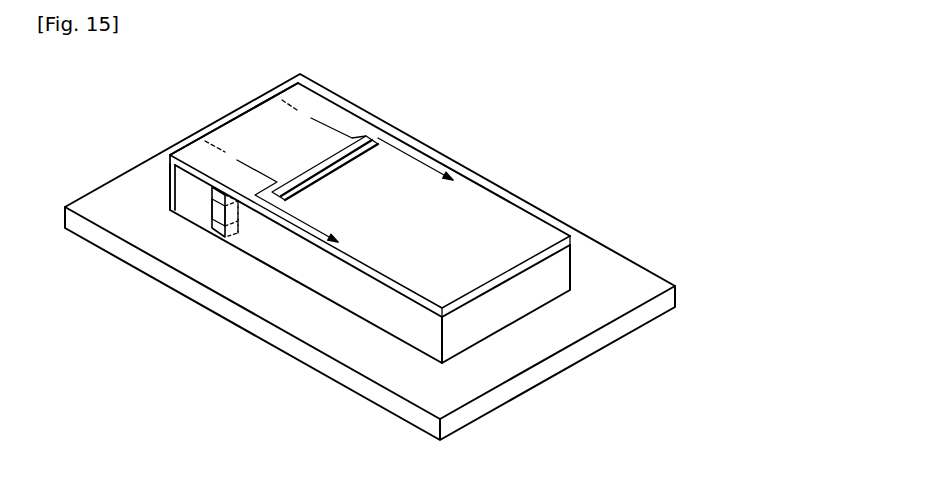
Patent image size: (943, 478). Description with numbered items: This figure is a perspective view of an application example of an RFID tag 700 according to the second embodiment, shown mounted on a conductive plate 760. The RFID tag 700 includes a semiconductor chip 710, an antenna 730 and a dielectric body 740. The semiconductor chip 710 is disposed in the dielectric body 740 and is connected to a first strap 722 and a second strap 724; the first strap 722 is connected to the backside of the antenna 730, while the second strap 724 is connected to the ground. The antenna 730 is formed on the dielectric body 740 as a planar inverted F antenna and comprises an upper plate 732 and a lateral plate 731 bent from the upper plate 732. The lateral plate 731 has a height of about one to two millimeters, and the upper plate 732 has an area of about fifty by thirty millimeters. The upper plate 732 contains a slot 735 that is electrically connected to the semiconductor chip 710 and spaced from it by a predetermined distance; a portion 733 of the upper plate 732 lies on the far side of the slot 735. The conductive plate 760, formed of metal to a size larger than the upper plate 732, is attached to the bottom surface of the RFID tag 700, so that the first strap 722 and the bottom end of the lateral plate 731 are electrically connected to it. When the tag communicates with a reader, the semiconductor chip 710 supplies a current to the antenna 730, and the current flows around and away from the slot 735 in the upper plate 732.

The RFID tag 700 is at (162, 157).
The semiconductor chip 710 is at (238, 233).
The first strap 722 is at (210, 197).
The second strap 724 is at (212, 231).
The antenna 730 is at (255, 134).
The lateral plate 731 is at (172, 183).
The upper plate 732 is at (200, 147).
The second top plate portion 733 is at (488, 207).
The slot 735 is at (368, 142).
The dielectric body 740 is at (312, 267).
The conductive plate 760 is at (638, 282).